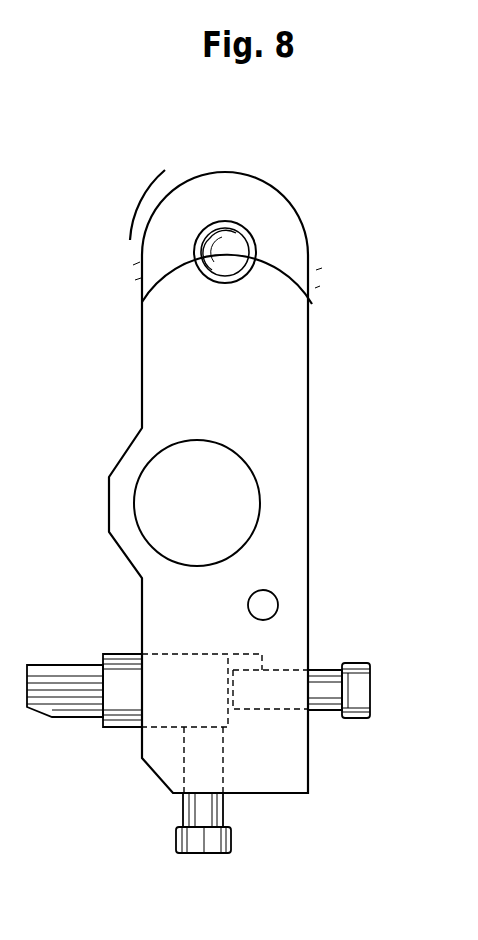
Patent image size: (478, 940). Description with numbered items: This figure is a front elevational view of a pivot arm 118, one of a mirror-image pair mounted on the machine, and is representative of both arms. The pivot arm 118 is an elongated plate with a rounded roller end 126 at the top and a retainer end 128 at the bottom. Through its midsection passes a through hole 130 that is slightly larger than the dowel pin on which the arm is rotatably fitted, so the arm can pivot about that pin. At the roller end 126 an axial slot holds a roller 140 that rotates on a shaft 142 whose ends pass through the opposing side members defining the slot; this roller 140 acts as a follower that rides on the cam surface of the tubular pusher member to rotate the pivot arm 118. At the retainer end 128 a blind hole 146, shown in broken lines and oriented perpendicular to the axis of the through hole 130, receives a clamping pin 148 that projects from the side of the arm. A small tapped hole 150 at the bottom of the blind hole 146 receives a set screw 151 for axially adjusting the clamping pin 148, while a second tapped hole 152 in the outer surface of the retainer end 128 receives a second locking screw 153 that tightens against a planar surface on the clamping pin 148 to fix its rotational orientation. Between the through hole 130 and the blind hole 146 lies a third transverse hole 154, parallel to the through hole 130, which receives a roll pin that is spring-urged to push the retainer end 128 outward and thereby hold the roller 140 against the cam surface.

The pivot arm 118 is at (320, 490).
The roller end 126 is at (278, 178).
The retainer end 128 is at (280, 794).
The through hole 130 is at (240, 457).
The roller 140 is at (156, 180).
The shaft 142 is at (213, 221).
The blind hole 146 is at (262, 659).
The clamping pin 148 is at (121, 727).
The tapped hole 150 is at (286, 710).
The set screw 151 is at (372, 692).
The second tapped hole 152 is at (183, 759).
The second locking screw 153 is at (210, 853).
The third transverse hole 154 is at (278, 604).